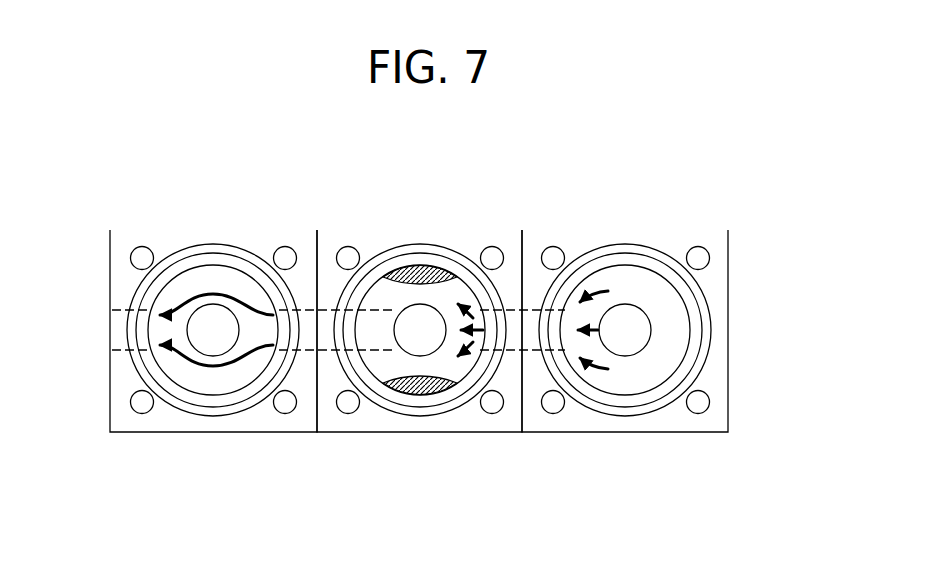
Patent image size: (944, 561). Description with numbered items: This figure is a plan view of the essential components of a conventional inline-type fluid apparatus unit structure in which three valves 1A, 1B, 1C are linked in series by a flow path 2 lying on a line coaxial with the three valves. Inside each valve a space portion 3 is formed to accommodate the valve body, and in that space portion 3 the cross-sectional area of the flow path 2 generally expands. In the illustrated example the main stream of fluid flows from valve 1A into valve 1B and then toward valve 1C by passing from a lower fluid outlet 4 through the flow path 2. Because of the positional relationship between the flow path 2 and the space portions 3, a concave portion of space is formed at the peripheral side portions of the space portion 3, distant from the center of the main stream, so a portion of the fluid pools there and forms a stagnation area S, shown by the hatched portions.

The valve 1A is at (680, 433).
The valve 1B is at (470, 433).
The valve 1C is at (260, 433).
The flow path 2 is at (327, 310).
The space portion 3 is at (204, 276).
The lower fluid outlet 4 is at (418, 348).
The stagnation area S is at (425, 270).